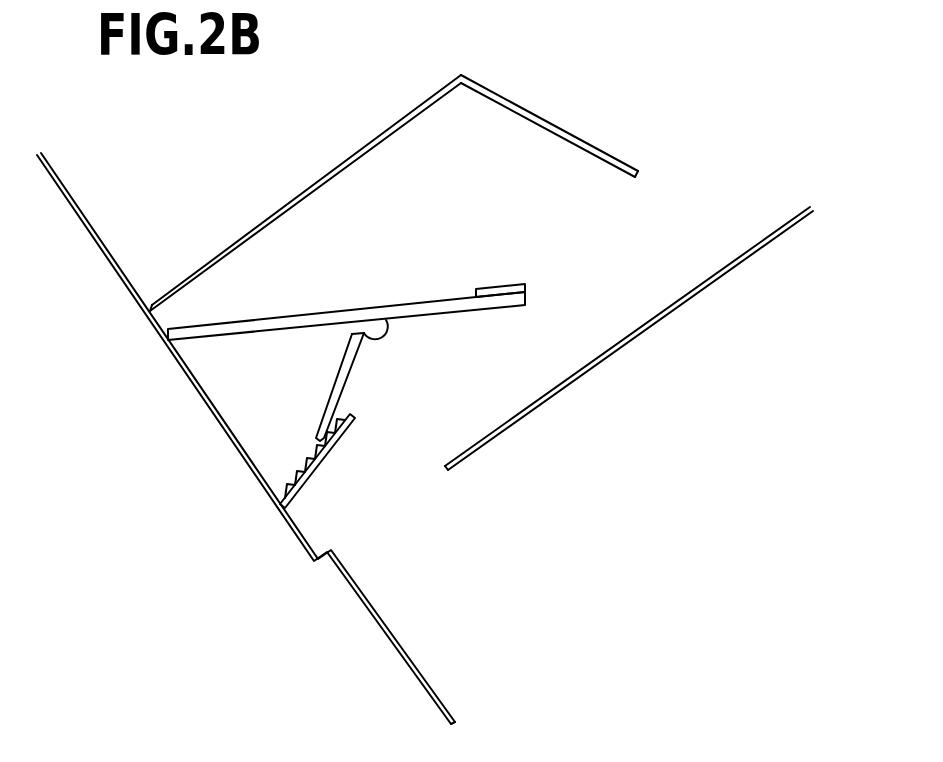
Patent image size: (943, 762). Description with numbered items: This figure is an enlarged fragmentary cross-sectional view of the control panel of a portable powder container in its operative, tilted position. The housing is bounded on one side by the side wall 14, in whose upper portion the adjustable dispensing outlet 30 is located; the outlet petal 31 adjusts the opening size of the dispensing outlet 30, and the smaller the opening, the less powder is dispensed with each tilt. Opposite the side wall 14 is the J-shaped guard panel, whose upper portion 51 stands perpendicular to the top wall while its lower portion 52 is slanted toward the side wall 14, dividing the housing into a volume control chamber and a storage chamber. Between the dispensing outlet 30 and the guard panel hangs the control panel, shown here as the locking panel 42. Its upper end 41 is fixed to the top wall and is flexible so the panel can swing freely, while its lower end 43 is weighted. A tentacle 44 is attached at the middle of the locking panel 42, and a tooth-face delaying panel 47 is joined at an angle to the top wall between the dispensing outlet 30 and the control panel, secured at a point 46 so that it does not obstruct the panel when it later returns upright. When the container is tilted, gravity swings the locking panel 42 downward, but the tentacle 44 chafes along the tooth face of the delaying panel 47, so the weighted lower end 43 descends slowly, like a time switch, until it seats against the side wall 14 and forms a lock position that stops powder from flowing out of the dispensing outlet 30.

The side wall 14 is at (693, 298).
The dispensing outlet 30 is at (373, 522).
The outlet petal 31 is at (422, 665).
The upper end of control panel 41 is at (310, 490).
The locking panel 42 is at (238, 328).
The lower end of control panel 43 is at (525, 288).
The tentacle 44 is at (332, 387).
The point 46 is at (357, 322).
The tooth-face delaying panel 47 is at (386, 322).
The upper portion of guard panel 51 is at (397, 122).
The lower portion of guard panel 52 is at (577, 132).